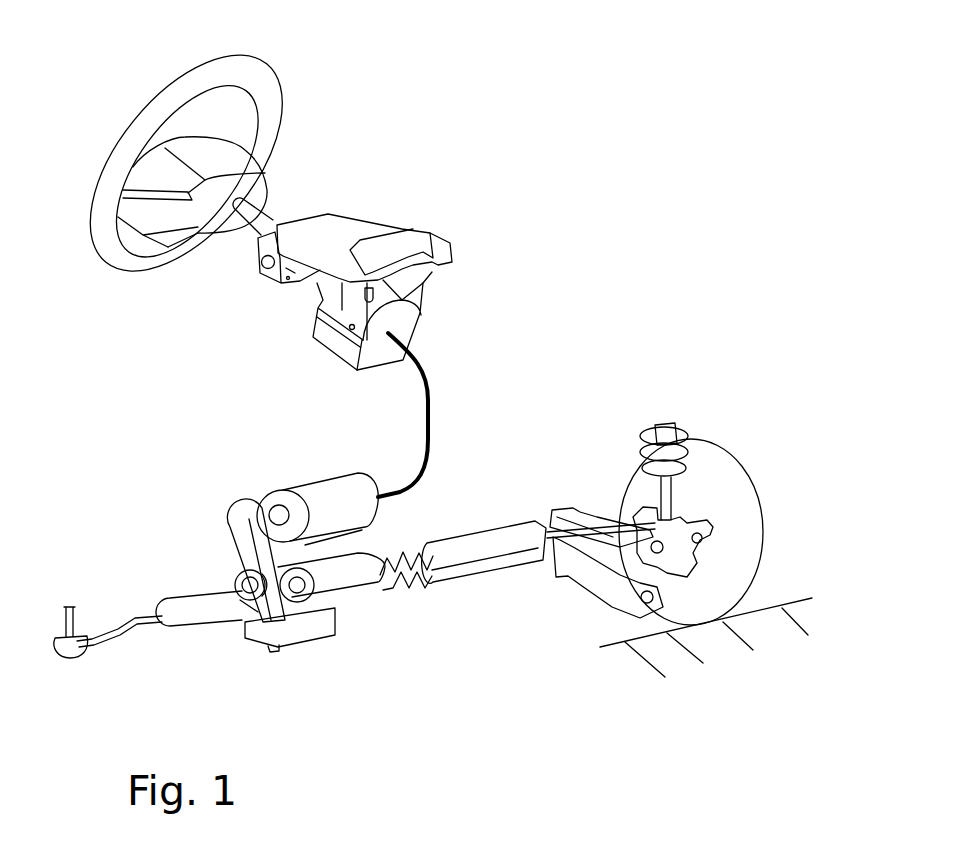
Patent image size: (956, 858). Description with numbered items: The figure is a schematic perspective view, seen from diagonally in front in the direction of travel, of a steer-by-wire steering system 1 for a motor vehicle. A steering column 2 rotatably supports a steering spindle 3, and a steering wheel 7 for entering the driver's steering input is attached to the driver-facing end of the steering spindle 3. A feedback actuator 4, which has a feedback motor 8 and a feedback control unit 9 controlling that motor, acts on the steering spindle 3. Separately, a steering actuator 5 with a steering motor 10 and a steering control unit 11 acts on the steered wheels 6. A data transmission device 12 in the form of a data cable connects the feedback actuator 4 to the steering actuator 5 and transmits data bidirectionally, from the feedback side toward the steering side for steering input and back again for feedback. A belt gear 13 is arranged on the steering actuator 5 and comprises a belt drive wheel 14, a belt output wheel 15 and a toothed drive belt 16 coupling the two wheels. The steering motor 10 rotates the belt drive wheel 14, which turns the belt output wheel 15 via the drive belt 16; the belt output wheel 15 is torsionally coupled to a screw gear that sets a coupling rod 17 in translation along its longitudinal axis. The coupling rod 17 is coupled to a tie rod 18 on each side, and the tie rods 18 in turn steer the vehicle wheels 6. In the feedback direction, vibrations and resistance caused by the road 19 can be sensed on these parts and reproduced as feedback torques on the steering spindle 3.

The steer-by-wire steering system 1 is at (722, 141).
The steering column 2 is at (497, 202).
The steering spindle 3 is at (263, 220).
The feedback actuator 4 is at (640, 328).
The steering actuator 5 is at (229, 418).
The steered wheels 6 is at (728, 497).
The steering wheel 7 is at (262, 92).
The feedback motor 8 is at (402, 292).
The feedback control unit 9 is at (403, 325).
The steering motor 10 is at (321, 514).
The steering control unit 11 is at (337, 497).
The data transmission device 12 is at (434, 425).
The belt gear 13 is at (137, 496).
The belt drive wheel 14 is at (232, 522).
The belt output wheel 15 is at (247, 575).
The drive belt 16 is at (285, 607).
The coupling rod 17 is at (400, 577).
The tie rod 18 is at (113, 642).
The road 19 is at (787, 602).